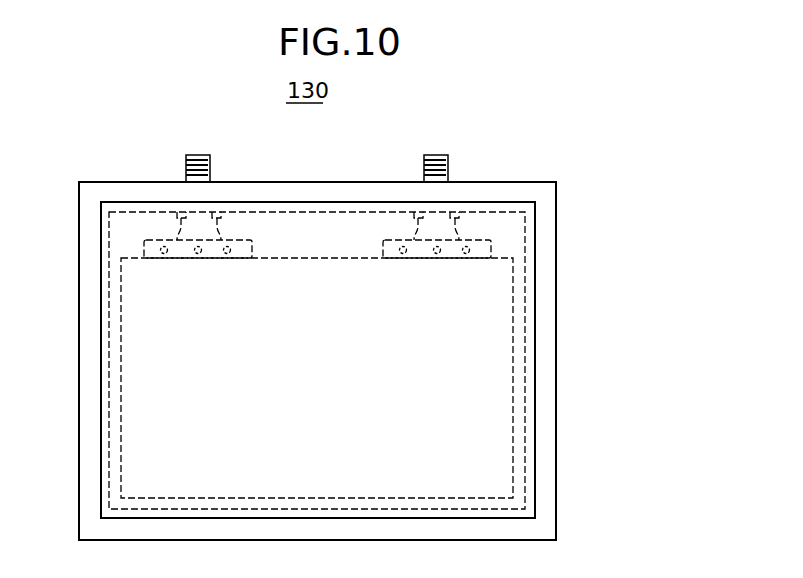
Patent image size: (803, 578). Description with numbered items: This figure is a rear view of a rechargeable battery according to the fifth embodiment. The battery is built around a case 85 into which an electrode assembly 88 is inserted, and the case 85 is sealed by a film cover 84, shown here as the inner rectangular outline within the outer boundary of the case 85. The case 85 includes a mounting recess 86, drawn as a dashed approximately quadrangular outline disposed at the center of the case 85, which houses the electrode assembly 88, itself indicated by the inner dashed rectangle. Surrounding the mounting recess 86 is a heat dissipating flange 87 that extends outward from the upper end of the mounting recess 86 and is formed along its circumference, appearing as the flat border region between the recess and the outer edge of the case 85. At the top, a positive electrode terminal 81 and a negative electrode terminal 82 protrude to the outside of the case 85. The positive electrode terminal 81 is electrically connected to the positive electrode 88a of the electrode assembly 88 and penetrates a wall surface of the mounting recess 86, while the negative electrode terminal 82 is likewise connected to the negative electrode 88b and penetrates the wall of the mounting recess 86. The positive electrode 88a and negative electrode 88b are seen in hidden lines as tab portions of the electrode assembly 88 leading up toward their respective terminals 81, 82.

The positive electrode terminal 81 is at (197, 155).
The negative electrode terminal 82 is at (435, 155).
The film cover 84 is at (513, 202).
The case 85 is at (488, 182).
The mounting recess 86 is at (525, 284).
The heat dissipating flange 87 is at (548, 248).
The electrode assembly 88 is at (513, 348).
The positive electrode 88a is at (157, 240).
The negative electrode 88b is at (395, 240).